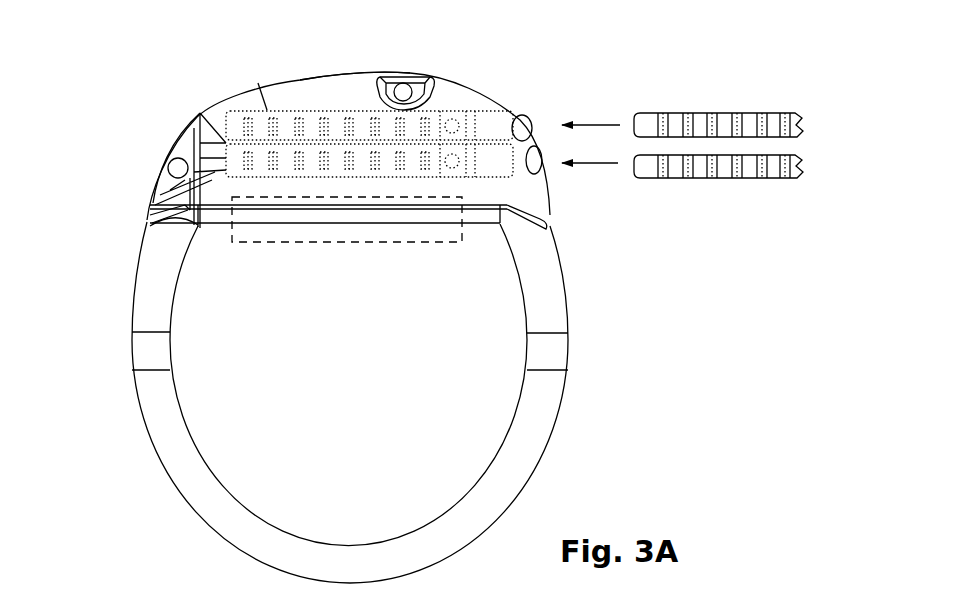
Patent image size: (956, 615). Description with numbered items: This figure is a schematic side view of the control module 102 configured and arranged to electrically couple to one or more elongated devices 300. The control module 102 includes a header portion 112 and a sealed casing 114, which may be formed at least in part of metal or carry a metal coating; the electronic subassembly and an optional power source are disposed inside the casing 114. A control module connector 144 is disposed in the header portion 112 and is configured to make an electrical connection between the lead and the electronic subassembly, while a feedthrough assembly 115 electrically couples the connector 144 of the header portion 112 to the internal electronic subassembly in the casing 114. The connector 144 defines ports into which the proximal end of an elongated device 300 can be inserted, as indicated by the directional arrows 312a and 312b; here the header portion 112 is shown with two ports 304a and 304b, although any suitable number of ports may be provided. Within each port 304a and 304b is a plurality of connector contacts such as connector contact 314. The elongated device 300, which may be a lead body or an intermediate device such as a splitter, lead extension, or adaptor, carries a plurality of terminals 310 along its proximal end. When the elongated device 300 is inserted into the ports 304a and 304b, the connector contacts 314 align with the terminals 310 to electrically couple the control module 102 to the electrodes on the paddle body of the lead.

The control module 102 is at (95, 82).
The header portion 112 is at (178, 100).
The sealed casing 114 is at (113, 265).
The feedthrough assembly 115 is at (462, 240).
The control module connector 144 is at (300, 112).
The connector contact 314 is at (250, 123).
The port 304a is at (590, 62).
The port 304b is at (556, 180).
The directional arrow 312a is at (593, 124).
The directional arrow 312b is at (602, 166).
The terminals 310 is at (795, 108).
The elongated device 300 is at (758, 90).